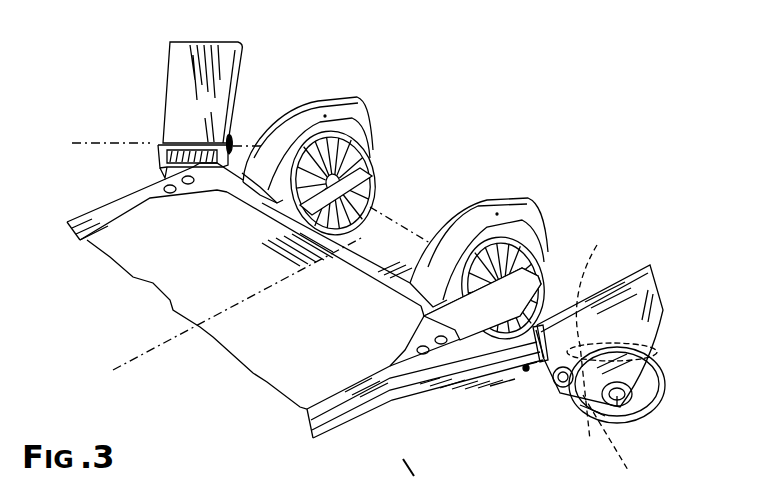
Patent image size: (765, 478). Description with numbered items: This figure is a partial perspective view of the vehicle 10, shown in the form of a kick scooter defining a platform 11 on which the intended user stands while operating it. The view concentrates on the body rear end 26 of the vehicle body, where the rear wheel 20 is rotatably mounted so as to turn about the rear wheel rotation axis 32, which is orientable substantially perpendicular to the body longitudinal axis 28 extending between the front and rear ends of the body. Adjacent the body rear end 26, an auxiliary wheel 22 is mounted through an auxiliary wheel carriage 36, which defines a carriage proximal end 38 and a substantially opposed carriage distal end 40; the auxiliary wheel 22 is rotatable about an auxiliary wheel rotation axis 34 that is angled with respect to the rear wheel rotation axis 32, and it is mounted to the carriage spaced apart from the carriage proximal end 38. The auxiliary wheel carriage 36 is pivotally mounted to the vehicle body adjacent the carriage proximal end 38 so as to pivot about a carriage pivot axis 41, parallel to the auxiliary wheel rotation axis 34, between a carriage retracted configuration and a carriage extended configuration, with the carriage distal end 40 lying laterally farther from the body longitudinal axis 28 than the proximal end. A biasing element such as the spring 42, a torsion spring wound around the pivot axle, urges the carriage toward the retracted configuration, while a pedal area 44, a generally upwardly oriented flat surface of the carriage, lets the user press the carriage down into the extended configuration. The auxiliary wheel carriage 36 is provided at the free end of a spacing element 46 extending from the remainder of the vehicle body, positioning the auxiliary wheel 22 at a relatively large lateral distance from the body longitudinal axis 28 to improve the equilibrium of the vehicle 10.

The vehicle 10 is at (545, 128).
The platform 11 is at (275, 390).
The rear wheel 20 is at (377, 135).
The auxiliary wheel 22 is at (666, 390).
The body rear end 26 is at (360, 174).
The body longitudinal axis 28 is at (118, 350).
The rear wheel rotation axis 32 is at (393, 218).
The auxiliary wheel rotation axis 34 is at (633, 432).
The auxiliary wheel carriage 36 is at (243, 92).
The carriage proximal end 38 is at (170, 157).
The carriage distal end 40 is at (238, 42).
The carriage pivot axis 41 is at (98, 142).
The spring 42 is at (547, 430).
The pedal area 44 is at (178, 68).
The spacing element 46 is at (177, 167).